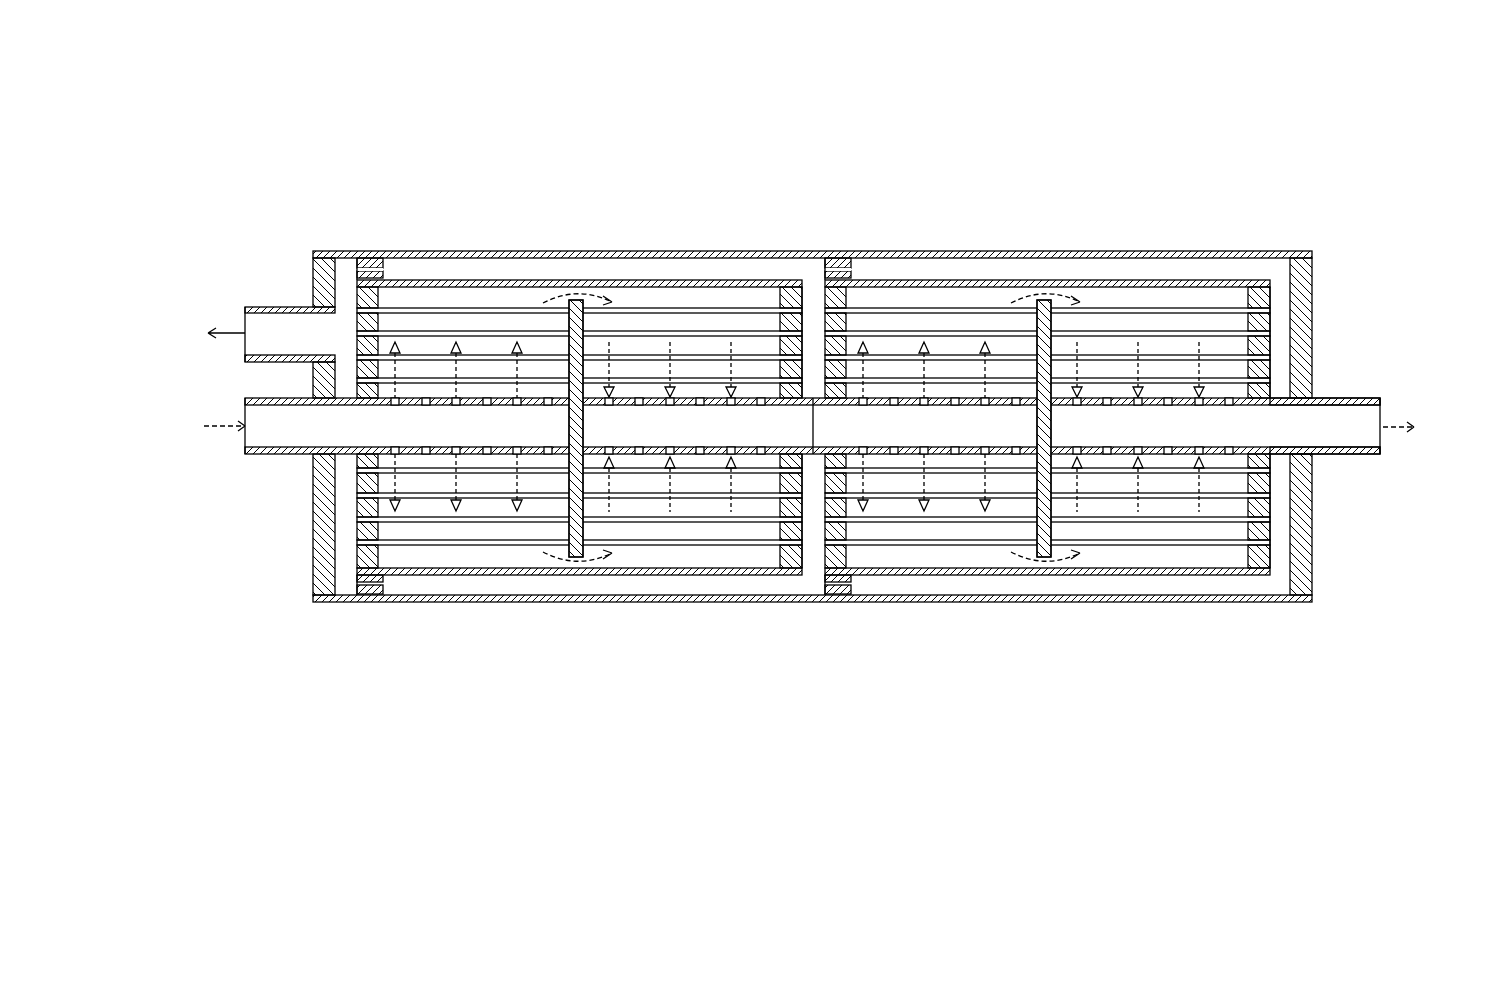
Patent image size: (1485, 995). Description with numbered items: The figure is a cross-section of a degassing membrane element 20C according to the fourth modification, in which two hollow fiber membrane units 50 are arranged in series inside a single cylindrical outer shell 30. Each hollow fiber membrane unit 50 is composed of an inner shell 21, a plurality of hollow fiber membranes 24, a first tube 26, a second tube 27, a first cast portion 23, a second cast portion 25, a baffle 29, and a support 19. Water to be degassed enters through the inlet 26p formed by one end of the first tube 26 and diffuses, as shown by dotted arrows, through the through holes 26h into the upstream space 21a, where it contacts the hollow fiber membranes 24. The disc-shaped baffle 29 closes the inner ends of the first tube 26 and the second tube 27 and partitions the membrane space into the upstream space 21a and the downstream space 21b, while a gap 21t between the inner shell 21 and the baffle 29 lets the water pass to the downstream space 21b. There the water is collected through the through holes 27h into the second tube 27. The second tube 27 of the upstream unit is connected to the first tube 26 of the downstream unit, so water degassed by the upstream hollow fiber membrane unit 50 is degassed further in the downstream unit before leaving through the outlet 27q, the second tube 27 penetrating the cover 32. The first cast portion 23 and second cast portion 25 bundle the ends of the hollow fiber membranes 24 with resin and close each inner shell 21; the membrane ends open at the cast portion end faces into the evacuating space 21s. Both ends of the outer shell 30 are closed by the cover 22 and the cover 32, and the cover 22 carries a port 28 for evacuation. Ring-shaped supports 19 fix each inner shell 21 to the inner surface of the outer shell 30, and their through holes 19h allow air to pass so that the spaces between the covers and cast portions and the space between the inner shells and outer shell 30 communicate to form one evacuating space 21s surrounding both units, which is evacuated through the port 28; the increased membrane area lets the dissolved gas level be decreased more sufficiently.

The degassing membrane element 20C is at (1232, 143).
The outer shell 30 is at (1268, 252).
The cover 22 is at (322, 538).
The cover 32 is at (1301, 558).
The port for evacuation 28 is at (262, 307).
The first tube 26 is at (796, 441).
The inlet 26p is at (246, 399).
The through holes 26h is at (427, 397).
The second tube 27 is at (1076, 511).
The through holes 27h is at (636, 397).
The outlet 27q is at (1382, 456).
The hollow fiber membrane unit 50 is at (803, 420).
The inner shell 21 is at (813, 405).
The upstream space 21a is at (403, 295).
The downstream space 21b is at (764, 560).
The evacuating space 21s is at (347, 295).
The gap 21t is at (575, 298).
The hollow fiber membranes 24 is at (478, 331).
The first cast portion 23 is at (790, 300).
The second cast portion 25 is at (828, 292).
The support 19 is at (602, 468).
The through hole 19h is at (362, 585).
The baffle 29 is at (574, 558).